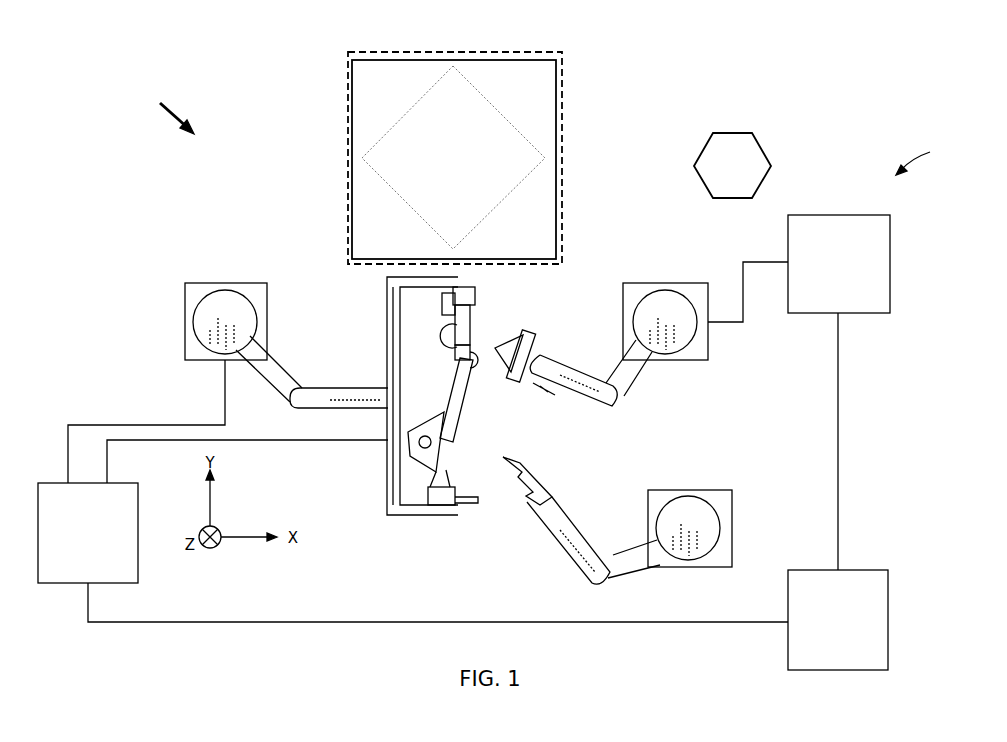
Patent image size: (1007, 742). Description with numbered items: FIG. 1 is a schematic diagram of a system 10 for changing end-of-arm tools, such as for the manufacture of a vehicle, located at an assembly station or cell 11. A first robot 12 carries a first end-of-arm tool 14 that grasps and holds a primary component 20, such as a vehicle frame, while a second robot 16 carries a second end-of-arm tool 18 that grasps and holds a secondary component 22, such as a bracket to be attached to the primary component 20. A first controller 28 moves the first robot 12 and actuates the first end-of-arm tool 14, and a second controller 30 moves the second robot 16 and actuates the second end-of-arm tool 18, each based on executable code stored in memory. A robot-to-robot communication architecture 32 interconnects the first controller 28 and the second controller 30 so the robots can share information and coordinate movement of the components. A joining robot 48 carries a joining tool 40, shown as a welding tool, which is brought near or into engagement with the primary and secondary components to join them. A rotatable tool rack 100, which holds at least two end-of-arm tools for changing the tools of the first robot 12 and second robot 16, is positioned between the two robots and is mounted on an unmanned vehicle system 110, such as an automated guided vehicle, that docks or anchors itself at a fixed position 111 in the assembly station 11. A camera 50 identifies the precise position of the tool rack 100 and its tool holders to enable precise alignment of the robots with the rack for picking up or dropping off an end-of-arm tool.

The system 10 is at (922, 160).
The assembly station or cell 11 is at (162, 108).
The first robot 12 is at (228, 307).
The first end-of-arm tool 14 is at (390, 352).
The second robot 16 is at (668, 303).
The second end-of-arm tool 18 is at (531, 336).
The primary component 20 is at (467, 318).
The secondary component 22 is at (509, 345).
The first controller 28 is at (62, 583).
The second controller 30 is at (815, 315).
The robot-to-robot communication architecture 32 is at (815, 570).
The joining tool 40 is at (537, 482).
The joining robot 48 is at (688, 548).
The camera 50 is at (732, 165).
The rotatable tool rack 100 is at (487, 97).
The unmanned vehicle system 110 is at (562, 99).
The fixed position 111 is at (562, 160).